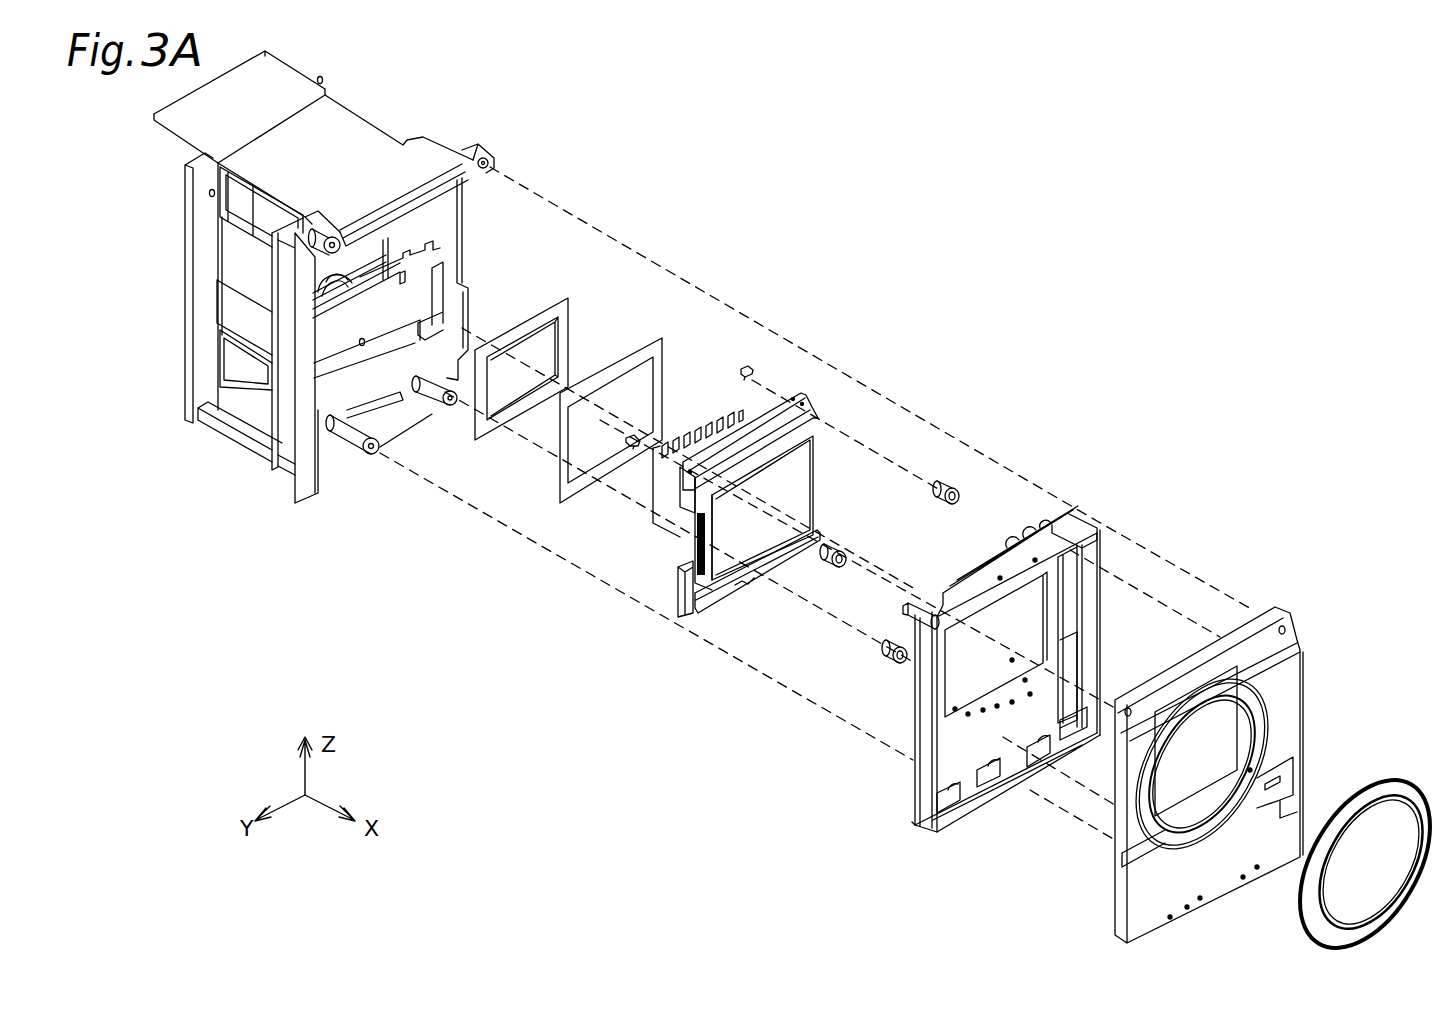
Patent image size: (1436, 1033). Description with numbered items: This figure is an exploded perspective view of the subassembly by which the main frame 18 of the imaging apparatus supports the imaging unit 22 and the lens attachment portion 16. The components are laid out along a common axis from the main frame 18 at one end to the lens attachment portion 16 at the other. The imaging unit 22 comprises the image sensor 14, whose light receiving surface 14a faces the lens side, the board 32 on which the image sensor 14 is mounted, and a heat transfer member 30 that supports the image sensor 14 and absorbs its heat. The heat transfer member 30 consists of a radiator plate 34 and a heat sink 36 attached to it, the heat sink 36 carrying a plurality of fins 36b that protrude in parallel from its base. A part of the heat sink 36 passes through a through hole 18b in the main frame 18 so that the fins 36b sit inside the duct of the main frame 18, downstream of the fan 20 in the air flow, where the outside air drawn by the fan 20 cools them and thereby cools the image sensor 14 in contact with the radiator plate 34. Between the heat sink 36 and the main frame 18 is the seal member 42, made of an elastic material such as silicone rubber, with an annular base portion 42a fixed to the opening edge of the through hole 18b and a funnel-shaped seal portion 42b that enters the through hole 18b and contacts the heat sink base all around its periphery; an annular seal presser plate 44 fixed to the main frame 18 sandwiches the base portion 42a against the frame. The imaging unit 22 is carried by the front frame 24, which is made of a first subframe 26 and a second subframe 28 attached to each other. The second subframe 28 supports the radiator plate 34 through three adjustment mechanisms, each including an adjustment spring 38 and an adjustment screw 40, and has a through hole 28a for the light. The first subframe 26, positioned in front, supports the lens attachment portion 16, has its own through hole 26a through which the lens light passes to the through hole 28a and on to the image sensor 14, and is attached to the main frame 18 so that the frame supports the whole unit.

The image sensor 14 is at (777, 531).
The light receiving surface 14a is at (797, 490).
The lens attachment portion 16 is at (1413, 784).
The main frame 18 is at (370, 152).
The through hole 18b is at (367, 251).
The fan 20 is at (325, 293).
The imaging unit 22 is at (838, 391).
The front frame 24 is at (1103, 724).
The first subframe 26 is at (1145, 775).
The through hole 26a is at (1190, 780).
The second subframe 28 is at (1001, 701).
The through hole 28a is at (987, 673).
The heat transfer member 30 is at (675, 526).
The board 32 is at (707, 603).
The radiator plate 34 is at (683, 593).
The heat sink 36 is at (686, 508).
The fins 36b is at (693, 428).
The adjustment spring 38 is at (938, 499).
The adjustment screw 40 is at (748, 371).
The seal member 42 is at (552, 379).
The base portion 42a is at (568, 310).
The seal portion 42b is at (520, 408).
The seal presser plate 44 is at (654, 340).